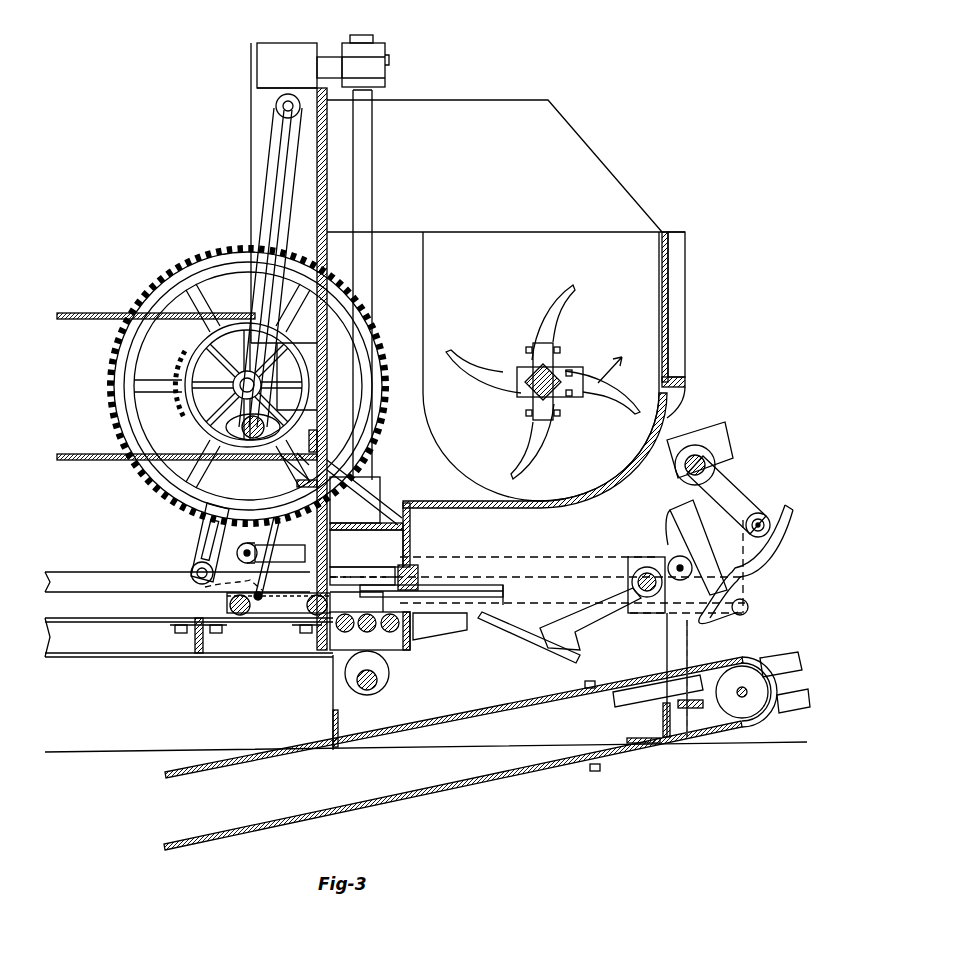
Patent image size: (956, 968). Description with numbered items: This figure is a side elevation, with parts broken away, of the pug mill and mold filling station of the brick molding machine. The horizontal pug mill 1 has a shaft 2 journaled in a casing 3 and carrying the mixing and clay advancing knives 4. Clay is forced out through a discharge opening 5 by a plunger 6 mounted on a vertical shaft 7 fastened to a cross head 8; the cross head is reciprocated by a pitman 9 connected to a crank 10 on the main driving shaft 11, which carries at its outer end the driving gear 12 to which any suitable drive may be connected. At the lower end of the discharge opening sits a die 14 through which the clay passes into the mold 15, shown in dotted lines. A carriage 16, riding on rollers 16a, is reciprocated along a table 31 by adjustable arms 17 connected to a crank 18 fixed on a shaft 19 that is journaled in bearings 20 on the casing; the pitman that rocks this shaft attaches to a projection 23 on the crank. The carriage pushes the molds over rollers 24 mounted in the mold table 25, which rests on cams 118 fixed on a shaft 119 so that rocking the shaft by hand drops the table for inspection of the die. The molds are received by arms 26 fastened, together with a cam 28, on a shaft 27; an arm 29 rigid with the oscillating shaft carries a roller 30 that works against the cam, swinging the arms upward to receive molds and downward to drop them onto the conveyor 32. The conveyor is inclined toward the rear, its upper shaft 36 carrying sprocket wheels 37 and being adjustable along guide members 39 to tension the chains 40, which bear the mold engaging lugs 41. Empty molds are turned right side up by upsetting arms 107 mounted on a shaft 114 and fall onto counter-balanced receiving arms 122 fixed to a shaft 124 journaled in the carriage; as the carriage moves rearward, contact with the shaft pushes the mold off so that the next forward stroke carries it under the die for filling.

The horizontal pug mill 1 is at (535, 370).
The shaft 2 is at (543, 382).
The casing 3 is at (672, 322).
The mixing and clay advancing knives 4 is at (532, 462).
The discharge opening 5 is at (393, 541).
The plunger 6 is at (385, 503).
The vertical shaft 7 is at (372, 325).
The cross head 8 is at (300, 50).
The pitman 9 is at (276, 180).
The crank 10 is at (242, 416).
The main driving shaft 11 is at (233, 382).
The driving gear 12 is at (178, 280).
The die 14 is at (350, 580).
The mold 15 is at (425, 591).
The carriage 16 is at (240, 616).
The rollers 16a is at (300, 615).
The adjustable arms 17 is at (474, 604).
The crank 18 is at (742, 562).
The shaft 19 is at (706, 462).
The bearings 20 is at (687, 443).
The projection 23 is at (684, 532).
The rollers 24 is at (365, 632).
The mold table 25 is at (340, 632).
The arms 26 is at (570, 641).
The shaft 27 is at (647, 567).
The cam 28 is at (783, 517).
The arm 29 is at (741, 502).
The roller 30 is at (763, 518).
The table 31 is at (164, 620).
The conveyor 32 is at (555, 698).
The shaft 36 is at (748, 700).
The sprocket wheels 37 is at (735, 702).
The guide members 39 is at (786, 655).
The chains 40 is at (628, 758).
The mold engaging lugs 41 is at (590, 690).
The upsetting arms 107 is at (212, 534).
The shaft 114 is at (191, 571).
The cams 118 is at (390, 672).
The shaft 119 is at (380, 688).
The counter-balanced receiving arms 122 is at (270, 552).
The shaft 124 is at (230, 585).